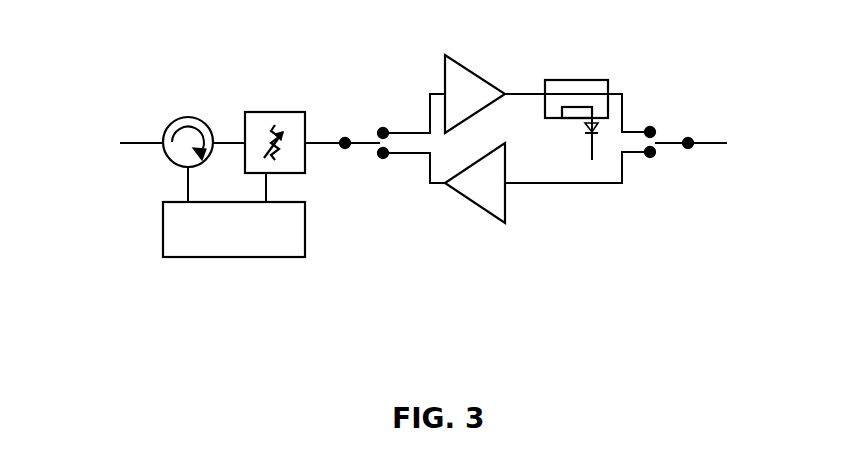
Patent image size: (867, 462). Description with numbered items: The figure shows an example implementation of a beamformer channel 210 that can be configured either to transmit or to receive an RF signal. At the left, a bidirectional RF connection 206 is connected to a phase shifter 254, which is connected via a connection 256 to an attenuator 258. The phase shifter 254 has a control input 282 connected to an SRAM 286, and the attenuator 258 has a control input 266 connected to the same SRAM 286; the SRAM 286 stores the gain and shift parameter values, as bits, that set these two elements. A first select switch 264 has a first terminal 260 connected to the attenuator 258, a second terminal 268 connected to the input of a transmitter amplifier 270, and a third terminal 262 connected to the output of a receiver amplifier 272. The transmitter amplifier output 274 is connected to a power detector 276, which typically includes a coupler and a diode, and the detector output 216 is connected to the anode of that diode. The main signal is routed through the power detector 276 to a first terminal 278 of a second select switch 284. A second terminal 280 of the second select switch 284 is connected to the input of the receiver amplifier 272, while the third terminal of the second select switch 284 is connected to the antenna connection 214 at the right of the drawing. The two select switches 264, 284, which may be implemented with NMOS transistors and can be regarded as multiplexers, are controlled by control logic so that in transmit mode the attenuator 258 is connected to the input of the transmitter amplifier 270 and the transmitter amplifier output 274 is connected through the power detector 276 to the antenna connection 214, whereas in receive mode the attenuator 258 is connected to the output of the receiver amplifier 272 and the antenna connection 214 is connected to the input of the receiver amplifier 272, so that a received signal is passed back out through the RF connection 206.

The beamformer channel 210 is at (447, 377).
The bidirectional RF connection 206 is at (145, 140).
The antenna connection 214 is at (722, 138).
The phase shifter 254 is at (193, 118).
The connection 256 is at (227, 140).
The attenuator 258 is at (272, 112).
The first terminal 260 is at (333, 140).
The first select switch 264 is at (362, 138).
The second terminal 268 is at (405, 130).
The transmitter amplifier 270 is at (492, 103).
The receiver amplifier 272 is at (492, 191).
The transmitter amplifier output 274 is at (523, 92).
The power detector 276 is at (573, 80).
The first terminal 278 is at (622, 88).
The third terminal 262 is at (420, 157).
The second terminal 280 is at (528, 183).
The detector output 216 is at (592, 160).
The second select switch 284 is at (672, 140).
The control input 282 is at (175, 167).
The control input 266 is at (268, 190).
The SRAM 286 is at (222, 250).